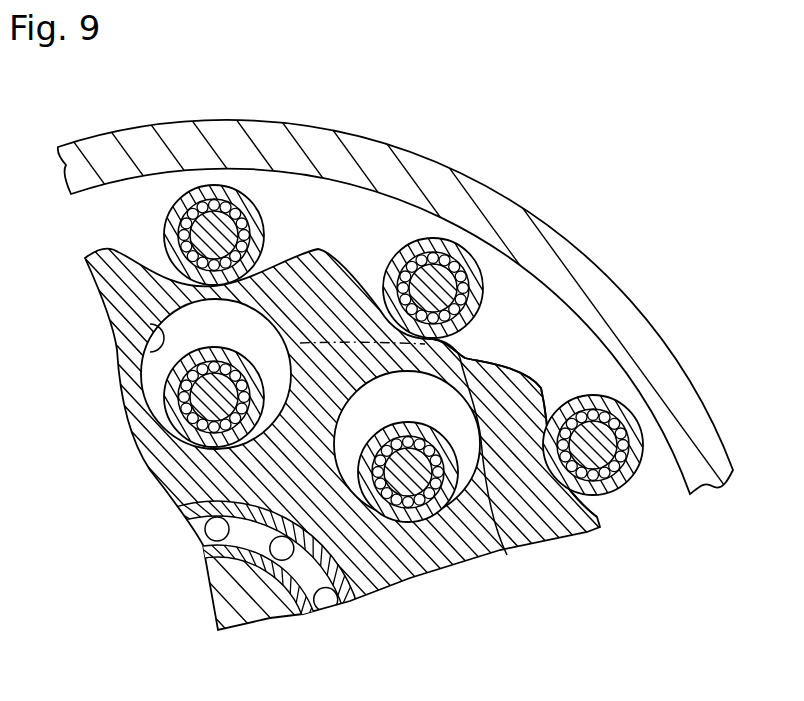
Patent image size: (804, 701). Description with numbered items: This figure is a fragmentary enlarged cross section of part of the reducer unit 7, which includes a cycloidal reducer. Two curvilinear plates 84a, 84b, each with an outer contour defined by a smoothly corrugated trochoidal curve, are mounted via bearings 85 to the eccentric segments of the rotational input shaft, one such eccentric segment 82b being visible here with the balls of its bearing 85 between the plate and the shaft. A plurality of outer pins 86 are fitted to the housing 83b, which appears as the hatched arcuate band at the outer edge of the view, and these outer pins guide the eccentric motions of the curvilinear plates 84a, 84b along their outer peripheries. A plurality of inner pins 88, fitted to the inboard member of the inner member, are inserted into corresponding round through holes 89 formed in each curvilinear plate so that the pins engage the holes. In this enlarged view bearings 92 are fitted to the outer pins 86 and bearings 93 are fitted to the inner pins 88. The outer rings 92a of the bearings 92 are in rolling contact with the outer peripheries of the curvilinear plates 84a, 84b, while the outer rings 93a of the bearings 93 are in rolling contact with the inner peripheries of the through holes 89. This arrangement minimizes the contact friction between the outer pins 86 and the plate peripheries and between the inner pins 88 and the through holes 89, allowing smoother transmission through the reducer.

The reducer unit 7 is at (150, 121).
The housing 83b is at (210, 130).
The outer pins 86 is at (218, 228).
The bearings 92 is at (452, 268).
The outer rings 92a is at (472, 262).
The curvilinear plate 84a is at (500, 357).
The curvilinear plate 84b is at (523, 388).
The through holes 89 is at (117, 342).
The outer rings 93a is at (173, 370).
The bearings 93 is at (182, 408).
The inner pins 88 is at (190, 420).
The eccentric segment 82b is at (262, 602).
The bearings 85 is at (330, 606).